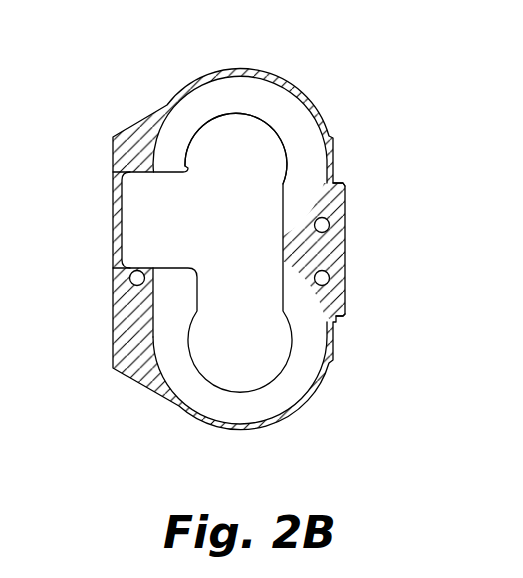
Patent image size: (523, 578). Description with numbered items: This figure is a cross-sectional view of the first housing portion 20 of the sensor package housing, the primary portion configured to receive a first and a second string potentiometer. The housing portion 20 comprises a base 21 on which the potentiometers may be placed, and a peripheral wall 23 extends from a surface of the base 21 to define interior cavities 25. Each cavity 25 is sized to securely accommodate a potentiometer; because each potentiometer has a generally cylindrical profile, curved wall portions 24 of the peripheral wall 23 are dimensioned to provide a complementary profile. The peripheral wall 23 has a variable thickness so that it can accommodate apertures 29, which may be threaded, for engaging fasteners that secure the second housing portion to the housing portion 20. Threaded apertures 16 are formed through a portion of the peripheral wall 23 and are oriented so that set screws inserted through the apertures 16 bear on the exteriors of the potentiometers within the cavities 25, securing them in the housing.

The first housing portion 20 is at (273, 63).
The base 21 is at (255, 147).
The peripheral wall 23 is at (336, 264).
The curved wall portions 24 is at (232, 71).
The interior cavities 25 is at (214, 144).
The apertures 16 is at (340, 205).
The apertures 29 is at (332, 231).